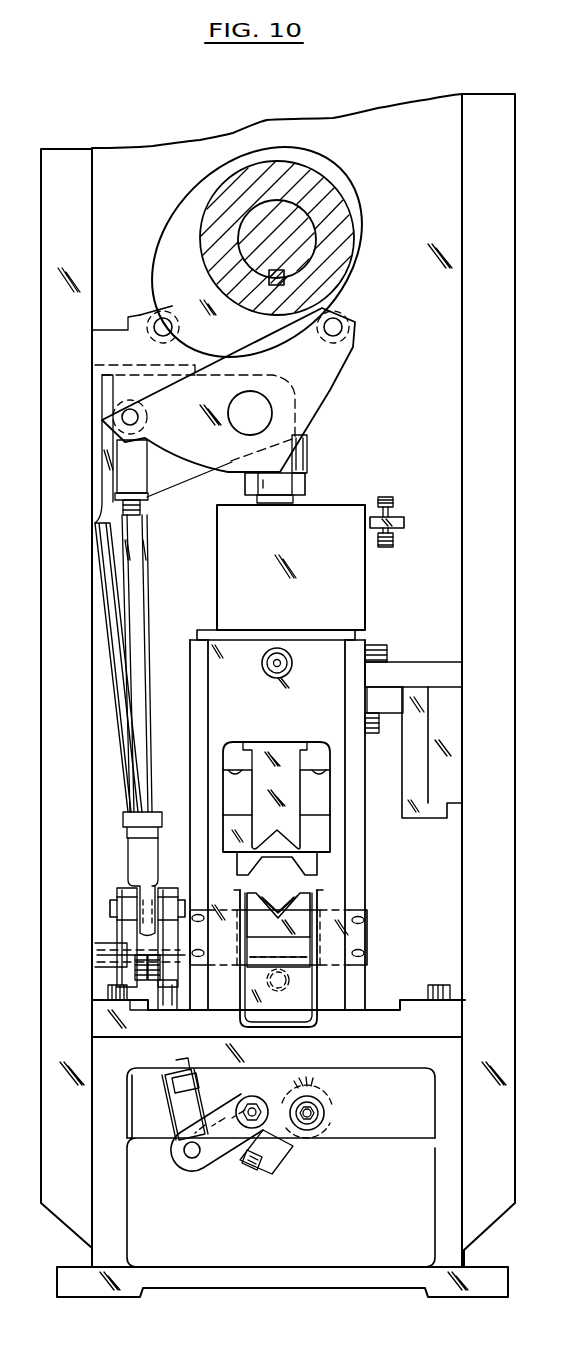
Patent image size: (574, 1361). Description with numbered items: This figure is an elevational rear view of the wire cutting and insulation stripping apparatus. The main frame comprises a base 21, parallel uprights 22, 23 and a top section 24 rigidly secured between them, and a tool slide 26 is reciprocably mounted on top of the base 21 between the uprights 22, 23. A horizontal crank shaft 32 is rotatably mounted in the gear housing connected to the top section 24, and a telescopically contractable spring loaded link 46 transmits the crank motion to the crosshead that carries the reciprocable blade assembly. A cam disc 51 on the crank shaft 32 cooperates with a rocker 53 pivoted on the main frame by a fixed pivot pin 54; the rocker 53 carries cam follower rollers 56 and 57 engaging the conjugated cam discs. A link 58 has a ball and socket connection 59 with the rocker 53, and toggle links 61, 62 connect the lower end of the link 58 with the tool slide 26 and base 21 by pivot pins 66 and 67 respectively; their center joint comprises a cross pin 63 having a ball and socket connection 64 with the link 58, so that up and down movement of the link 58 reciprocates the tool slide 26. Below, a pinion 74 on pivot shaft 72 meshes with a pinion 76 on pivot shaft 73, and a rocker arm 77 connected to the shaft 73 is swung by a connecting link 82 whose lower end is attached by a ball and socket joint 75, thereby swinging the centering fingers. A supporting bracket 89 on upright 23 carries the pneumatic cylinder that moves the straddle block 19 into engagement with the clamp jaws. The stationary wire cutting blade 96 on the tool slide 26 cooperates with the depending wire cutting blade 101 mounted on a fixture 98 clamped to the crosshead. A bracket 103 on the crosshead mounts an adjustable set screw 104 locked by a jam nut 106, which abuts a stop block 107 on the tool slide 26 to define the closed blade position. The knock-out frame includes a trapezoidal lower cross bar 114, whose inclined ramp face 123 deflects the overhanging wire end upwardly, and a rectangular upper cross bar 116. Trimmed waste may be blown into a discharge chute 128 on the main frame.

The straddle block 19 is at (320, 870).
The base 21 is at (400, 1062).
The upright 22 is at (60, 148).
The upright 23 is at (492, 97).
The top section 24 is at (378, 110).
The tool slide 26 is at (356, 628).
The crank shaft 32 is at (306, 235).
The spring loaded link 46 is at (325, 459).
The cam disc 51 is at (186, 198).
The rocker 53 is at (328, 402).
The fixed pivot pin 54 is at (259, 409).
The cam follower roller 56 is at (153, 302).
The cam follower roller 57 is at (356, 305).
The link 58 is at (148, 558).
The ball and socket connection 59 is at (134, 416).
The toggle link 61 is at (163, 890).
The toggle link 62 is at (118, 942).
The cross pin 63 is at (110, 911).
The ball and socket connection 64 is at (136, 870).
The pivot pin 66 is at (168, 992).
The pivot pin 67 is at (122, 968).
The pivot shaft 72 is at (312, 1131).
The pivot shaft 73 is at (250, 1132).
The pinion 74 is at (320, 1086).
The ball and socket joint 75 is at (180, 1160).
The pinion 76 is at (250, 1092).
The rocker arm 77 is at (220, 1170).
The connecting link 82 is at (110, 628).
The supporting bracket 89 is at (430, 662).
The wire cutting blade 96 is at (318, 906).
The fixture 98 is at (288, 748).
The wire cutting blade 101 is at (290, 798).
The bracket 103 is at (405, 530).
The set screw 104 is at (390, 497).
The jam nut 106 is at (402, 518).
The stop block 107 is at (386, 648).
The lower cross bar 114 is at (287, 896).
The upper cross bar 116 is at (318, 840).
The ramp face 123 is at (367, 925).
The discharge chute 128 is at (285, 1022).